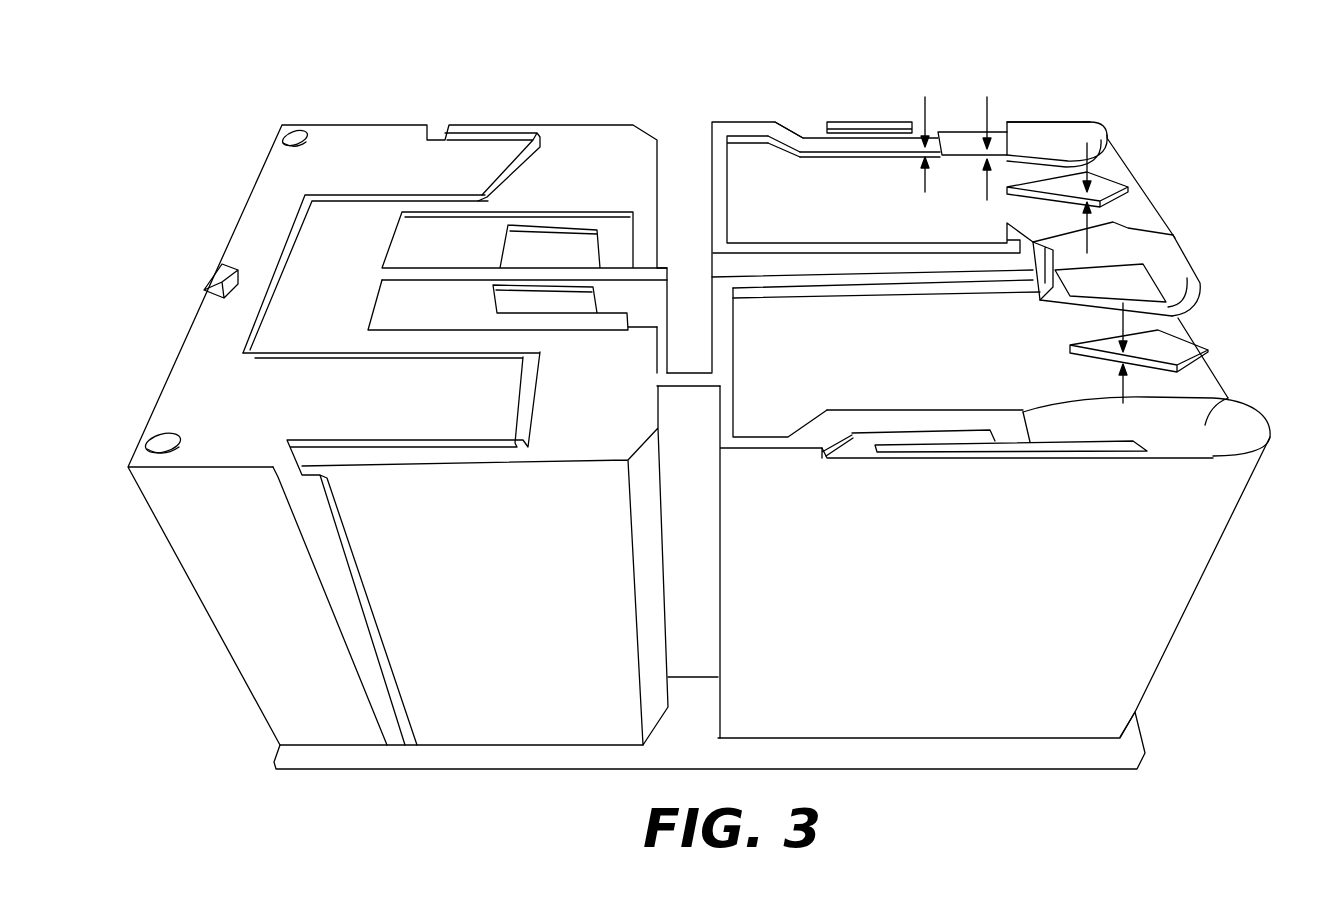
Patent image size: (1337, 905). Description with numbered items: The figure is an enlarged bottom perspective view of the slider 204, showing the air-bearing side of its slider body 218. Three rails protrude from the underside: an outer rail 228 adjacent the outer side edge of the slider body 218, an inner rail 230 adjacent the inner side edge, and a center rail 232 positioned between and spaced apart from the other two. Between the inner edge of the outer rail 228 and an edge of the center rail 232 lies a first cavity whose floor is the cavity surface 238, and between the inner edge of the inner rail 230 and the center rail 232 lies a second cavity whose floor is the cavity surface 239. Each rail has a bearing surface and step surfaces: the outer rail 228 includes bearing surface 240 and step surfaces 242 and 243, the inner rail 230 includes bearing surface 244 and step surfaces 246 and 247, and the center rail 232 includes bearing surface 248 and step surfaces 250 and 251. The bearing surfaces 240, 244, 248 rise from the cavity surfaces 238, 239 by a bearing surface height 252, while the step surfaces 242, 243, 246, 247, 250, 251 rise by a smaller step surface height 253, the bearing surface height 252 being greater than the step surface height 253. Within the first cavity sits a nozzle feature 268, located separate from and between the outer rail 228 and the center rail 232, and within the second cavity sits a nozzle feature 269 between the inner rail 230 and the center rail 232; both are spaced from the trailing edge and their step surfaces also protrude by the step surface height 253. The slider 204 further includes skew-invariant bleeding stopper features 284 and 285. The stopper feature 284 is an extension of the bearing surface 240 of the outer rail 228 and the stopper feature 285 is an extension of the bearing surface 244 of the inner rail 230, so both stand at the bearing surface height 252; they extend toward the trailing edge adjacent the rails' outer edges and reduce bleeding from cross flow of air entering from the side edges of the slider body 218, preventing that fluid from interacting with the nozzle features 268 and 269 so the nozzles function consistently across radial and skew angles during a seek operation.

The slider 204 is at (1152, 80).
The slider body 218 is at (183, 587).
The outer rail 228 is at (1036, 112).
The inner rail 230 is at (1059, 395).
The center rail 232 is at (944, 302).
The cavity surface 238 is at (856, 206).
The cavity surface 239 is at (856, 356).
The bearing surface 240 is at (845, 143).
The step surface 242 is at (1048, 142).
The step surface 243 is at (815, 130).
The bearing surface 244 is at (1000, 418).
The step surface 246 is at (1205, 425).
The step surface 247 is at (853, 447).
The bearing surface 248 is at (1155, 245).
The step surface 250 is at (1108, 243).
The step surface 251 is at (1057, 285).
The bearing surface height 252 is at (923, 188).
The step surface height 253 is at (984, 188).
The nozzle feature 268 is at (1048, 199).
The nozzle feature 269 is at (1196, 328).
The stopper feature 284 is at (964, 112).
The stopper feature 285 is at (1085, 465).